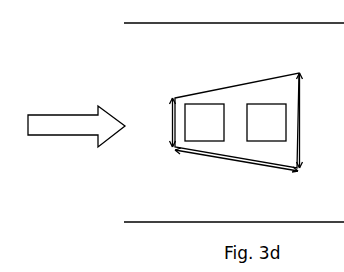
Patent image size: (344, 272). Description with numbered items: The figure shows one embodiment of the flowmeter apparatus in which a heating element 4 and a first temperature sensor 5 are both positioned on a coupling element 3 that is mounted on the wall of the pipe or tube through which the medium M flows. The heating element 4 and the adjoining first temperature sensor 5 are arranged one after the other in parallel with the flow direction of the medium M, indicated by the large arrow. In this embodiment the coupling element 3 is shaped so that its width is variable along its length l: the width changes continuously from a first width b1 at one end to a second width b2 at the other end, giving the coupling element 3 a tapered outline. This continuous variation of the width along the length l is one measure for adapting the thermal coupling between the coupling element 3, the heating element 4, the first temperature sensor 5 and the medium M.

The coupling element 3 is at (197, 89).
The heating element 4 is at (204, 122).
The first temperature sensor 5 is at (266, 122).
The medium M is at (76, 118).
The width of the coupling element b1 is at (165, 122).
The width of the coupling element b2 is at (306, 120).
The length of the coupling element l is at (236, 166).